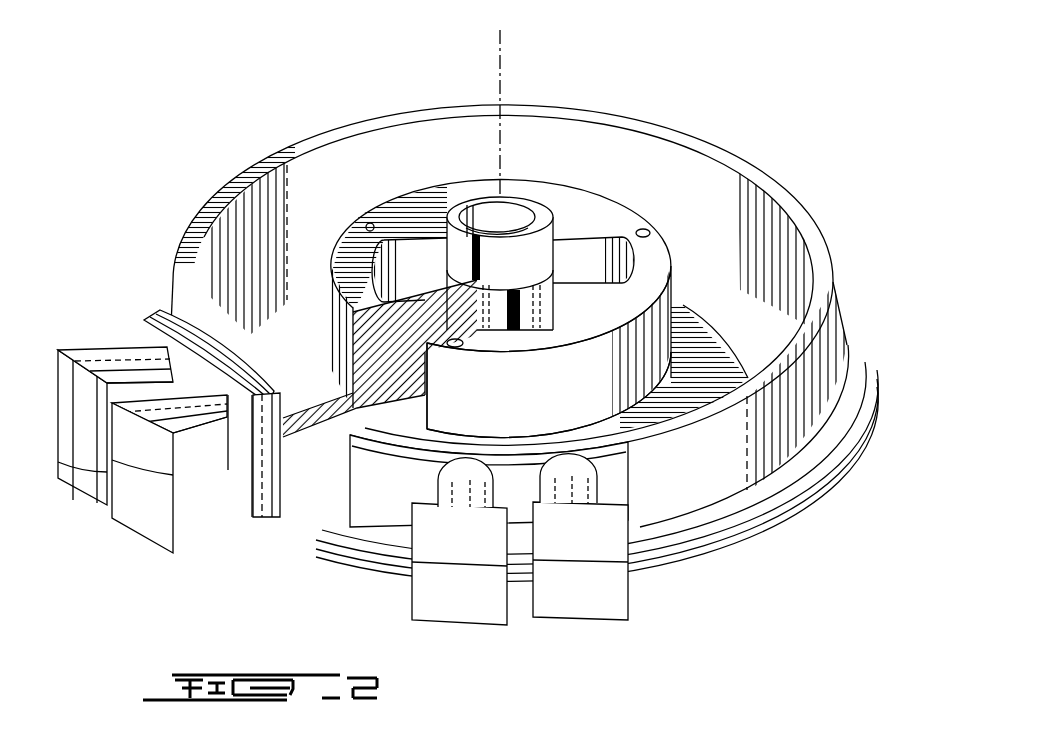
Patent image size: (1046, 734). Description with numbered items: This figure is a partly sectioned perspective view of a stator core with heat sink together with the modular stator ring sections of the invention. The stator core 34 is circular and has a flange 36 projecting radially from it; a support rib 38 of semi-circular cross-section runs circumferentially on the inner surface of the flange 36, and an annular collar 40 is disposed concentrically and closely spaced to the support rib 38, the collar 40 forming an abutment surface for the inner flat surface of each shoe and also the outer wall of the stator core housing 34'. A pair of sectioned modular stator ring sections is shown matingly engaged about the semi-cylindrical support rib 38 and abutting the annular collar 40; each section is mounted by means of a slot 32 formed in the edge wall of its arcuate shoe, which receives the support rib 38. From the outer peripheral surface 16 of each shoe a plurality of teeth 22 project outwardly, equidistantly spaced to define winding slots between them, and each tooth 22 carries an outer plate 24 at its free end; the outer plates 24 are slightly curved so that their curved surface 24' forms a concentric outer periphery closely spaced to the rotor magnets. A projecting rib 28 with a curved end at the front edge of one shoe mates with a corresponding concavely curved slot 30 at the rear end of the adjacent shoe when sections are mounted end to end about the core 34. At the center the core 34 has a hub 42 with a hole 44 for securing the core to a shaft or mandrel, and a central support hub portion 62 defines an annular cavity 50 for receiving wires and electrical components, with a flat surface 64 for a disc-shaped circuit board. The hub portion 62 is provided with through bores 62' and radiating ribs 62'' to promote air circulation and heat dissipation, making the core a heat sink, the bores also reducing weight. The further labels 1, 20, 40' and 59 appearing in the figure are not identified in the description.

The motor assembly 1 is at (766, 610).
The outer peripheral surface 16 is at (190, 378).
The arcuate brush holder segment 20 is at (165, 305).
The teeth 22 is at (133, 357).
The outer plate 24 is at (339, 491).
The curved surface 24' is at (343, 583).
The projecting rib 28 is at (264, 505).
The concavely curved slot 30 is at (430, 447).
The slot 32 is at (263, 512).
The stator core 34 is at (501, 237).
The stator core housing 34' is at (497, 280).
The flange 36 is at (815, 485).
The support rib 38 is at (828, 437).
The annular collar 40 is at (509, 287).
The ring top face 40' is at (845, 200).
The hub 42 is at (522, 195).
The hole 44 is at (512, 200).
The annular cavity 50 is at (745, 225).
The locating hole 59 is at (369, 222).
The central support hub portion 62 is at (752, 353).
The through bores 62' is at (758, 270).
The radiating ribs 62'' is at (665, 176).
The flat surface 64 is at (580, 245).